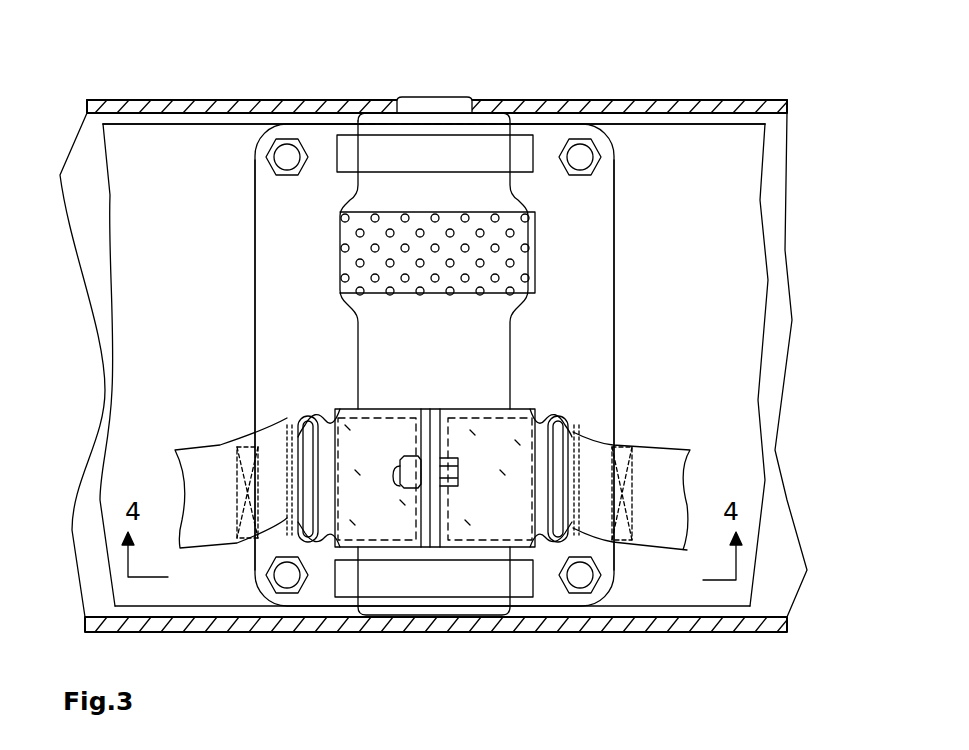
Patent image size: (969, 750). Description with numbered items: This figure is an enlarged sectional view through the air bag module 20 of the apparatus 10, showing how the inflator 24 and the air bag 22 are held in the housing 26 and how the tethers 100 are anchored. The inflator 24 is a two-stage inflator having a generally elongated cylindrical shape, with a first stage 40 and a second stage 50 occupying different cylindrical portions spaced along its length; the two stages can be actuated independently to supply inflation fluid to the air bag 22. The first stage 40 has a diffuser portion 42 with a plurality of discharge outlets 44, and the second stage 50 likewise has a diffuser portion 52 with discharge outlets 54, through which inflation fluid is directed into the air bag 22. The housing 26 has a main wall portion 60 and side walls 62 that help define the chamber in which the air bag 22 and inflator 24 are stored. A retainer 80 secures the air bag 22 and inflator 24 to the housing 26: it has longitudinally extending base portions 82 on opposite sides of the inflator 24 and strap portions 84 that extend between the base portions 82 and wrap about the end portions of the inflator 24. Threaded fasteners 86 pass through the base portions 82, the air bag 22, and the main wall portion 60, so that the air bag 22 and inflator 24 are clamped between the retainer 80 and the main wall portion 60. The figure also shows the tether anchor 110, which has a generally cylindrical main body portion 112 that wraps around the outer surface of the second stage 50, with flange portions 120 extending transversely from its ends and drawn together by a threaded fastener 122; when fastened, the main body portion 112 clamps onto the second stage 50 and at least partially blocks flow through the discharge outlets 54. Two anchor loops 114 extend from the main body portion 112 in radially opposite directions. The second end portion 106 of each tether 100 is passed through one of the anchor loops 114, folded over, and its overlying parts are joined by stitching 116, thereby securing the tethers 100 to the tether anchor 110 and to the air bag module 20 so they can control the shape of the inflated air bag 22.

The apparatus 10 is at (203, 72).
The air bag module 20 is at (262, 76).
The air bag 22 is at (140, 145).
The inflator 24 is at (497, 345).
The housing 26 is at (302, 110).
The first stage 40 is at (435, 245).
The diffuser portion 42 is at (373, 232).
The discharge outlets 44 is at (350, 277).
The second stage 50 is at (426, 509).
The diffuser portion 52 is at (385, 450).
The discharge outlets 54 is at (503, 462).
The main wall portion 60 is at (775, 262).
The side walls 62 is at (655, 108).
The retainer 80 is at (594, 276).
The base portions 82 is at (268, 280).
The strap portions 84 is at (418, 153).
The fastening means 86 is at (272, 157).
The tethers 100 is at (203, 480).
The second end portion 106 is at (268, 433).
The tether anchor 110 is at (398, 540).
The main body portion 112 is at (392, 522).
The anchor loops 114 is at (317, 405).
The interconnecting means 116 is at (250, 470).
The flange portions 120 is at (443, 532).
The fastening means 122 is at (408, 488).